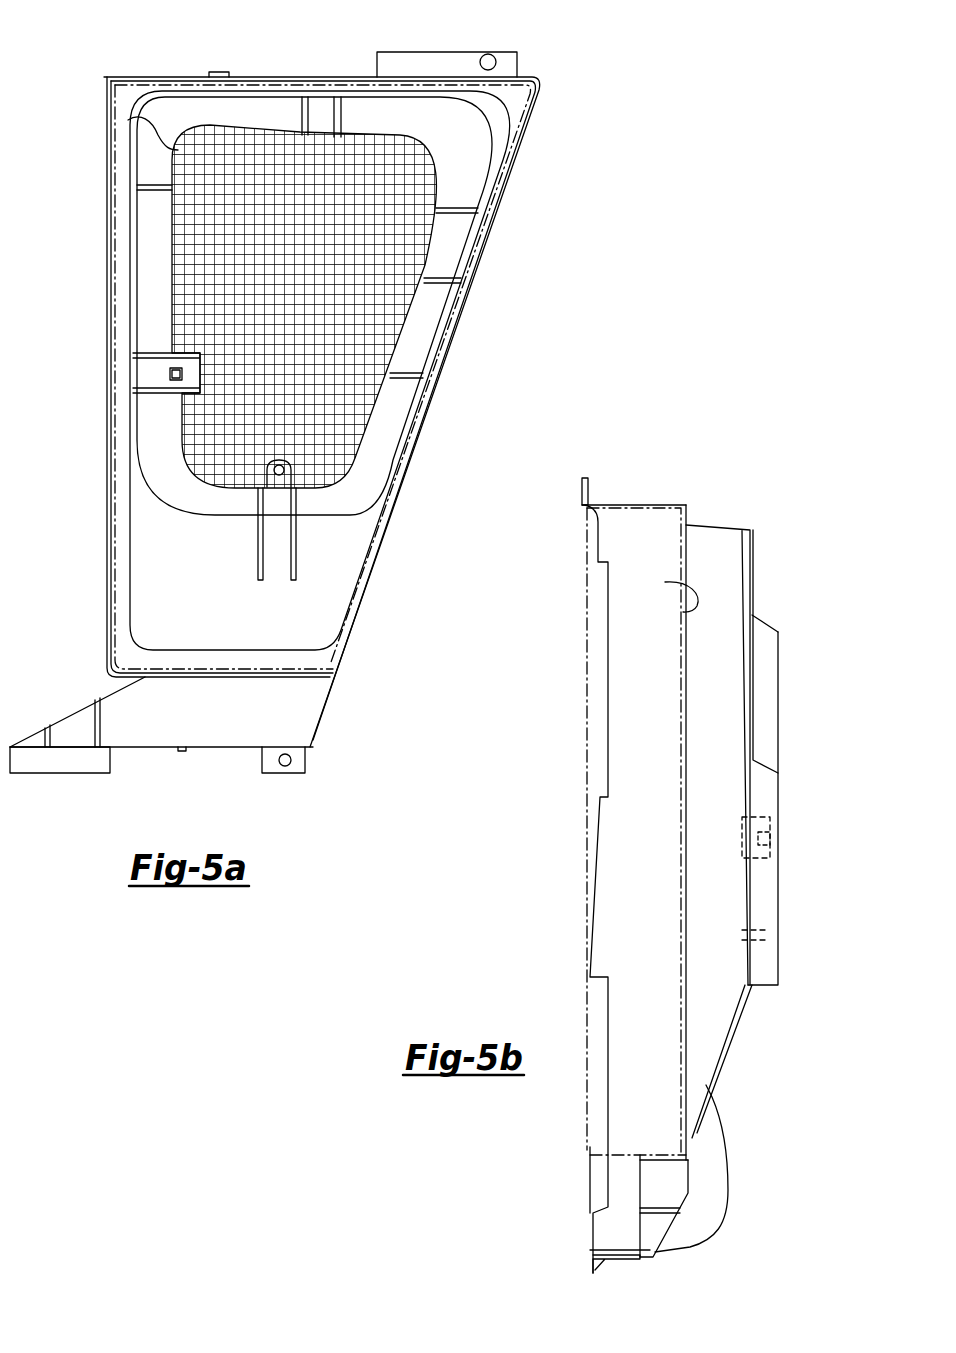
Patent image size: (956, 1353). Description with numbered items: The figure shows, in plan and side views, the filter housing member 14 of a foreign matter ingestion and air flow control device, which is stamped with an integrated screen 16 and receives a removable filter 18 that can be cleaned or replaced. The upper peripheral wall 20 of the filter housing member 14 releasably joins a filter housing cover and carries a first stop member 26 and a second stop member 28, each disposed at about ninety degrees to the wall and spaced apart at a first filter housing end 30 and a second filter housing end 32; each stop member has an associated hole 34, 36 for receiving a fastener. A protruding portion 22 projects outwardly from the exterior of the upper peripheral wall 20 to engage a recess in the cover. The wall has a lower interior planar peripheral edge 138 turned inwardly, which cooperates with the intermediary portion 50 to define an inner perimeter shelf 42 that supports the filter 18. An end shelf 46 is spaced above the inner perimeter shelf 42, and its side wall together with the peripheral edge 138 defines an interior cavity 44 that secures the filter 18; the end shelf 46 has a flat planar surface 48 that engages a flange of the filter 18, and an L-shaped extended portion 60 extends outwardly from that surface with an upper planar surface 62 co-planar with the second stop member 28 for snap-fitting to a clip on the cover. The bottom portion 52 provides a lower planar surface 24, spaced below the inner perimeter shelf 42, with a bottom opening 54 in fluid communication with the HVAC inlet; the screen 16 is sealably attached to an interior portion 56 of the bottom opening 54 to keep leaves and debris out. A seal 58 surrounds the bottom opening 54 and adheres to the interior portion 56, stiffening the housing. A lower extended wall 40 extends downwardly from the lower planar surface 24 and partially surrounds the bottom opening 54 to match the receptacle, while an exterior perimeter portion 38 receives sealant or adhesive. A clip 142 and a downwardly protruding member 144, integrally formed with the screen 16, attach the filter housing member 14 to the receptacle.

In FIG. 5A, the filter housing member 14 is at (290, 64).
In FIG. 5B, the filter housing member 14 is at (680, 498).
In FIG. 5A, the screen 16 is at (341, 307).
In FIG. 5A, the filter 18 is at (520, 152).
In FIG. 5B, the filter 18 is at (635, 512).
In FIG. 5A, the upper peripheral wall 20 is at (107, 448).
In FIG. 5B, the upper peripheral wall 20 is at (625, 898).
In FIG. 5A, the protruding portion 22 is at (216, 72).
In FIG. 5B, the lower planar surface 24 is at (750, 548).
In FIG. 5A, the first stop member 26 is at (450, 62).
In FIG. 5B, the first stop member 26 is at (588, 488).
In FIG. 5A, the second stop member 28 is at (263, 777).
In FIG. 5B, the second stop member 28 is at (598, 1272).
In FIG. 5A, the first filter housing end 30 is at (570, 76).
In FIG. 5A, the second filter housing end 32 is at (325, 755).
In FIG. 5A, the hole 34 is at (497, 62).
In FIG. 5A, the hole 36 is at (291, 760).
In FIG. 5B, the exterior perimeter portion 38 is at (760, 987).
In FIG. 5B, the lower extended wall 40 is at (765, 716).
In FIG. 5A, the inner perimeter shelf 42 is at (345, 612).
In FIG. 5A, the interior cavity 44 is at (240, 598).
In FIG. 5A, the end shelf 46 is at (128, 707).
In FIG. 5B, the end shelf 46 is at (640, 1190).
In FIG. 5A, the flat planar surface 48 is at (210, 672).
In FIG. 5B, the flat planar surface 48 is at (605, 1150).
In FIG. 5B, the intermediary portion 50 is at (713, 1013).
In FIG. 5B, the bottom portion 52 is at (770, 616).
In FIG. 5A, the bottom opening 54 is at (304, 289).
In FIG. 5A, the interior portion 56 is at (128, 120).
In FIG. 5A, the seal 58 is at (170, 258).
In FIG. 5A, the L-shaped extended portion 60 is at (80, 760).
In FIG. 5B, the L-shaped extended portion 60 is at (603, 1252).
In FIG. 5A, the upper planar surface 62 is at (73, 775).
In FIG. 5B, the lower interior planar peripheral edge 138 is at (665, 582).
In FIG. 5A, the clip 142 is at (173, 370).
In FIG. 5B, the clip 142 is at (772, 826).
In FIG. 5B, the downwardly protruding member 144 is at (765, 930).